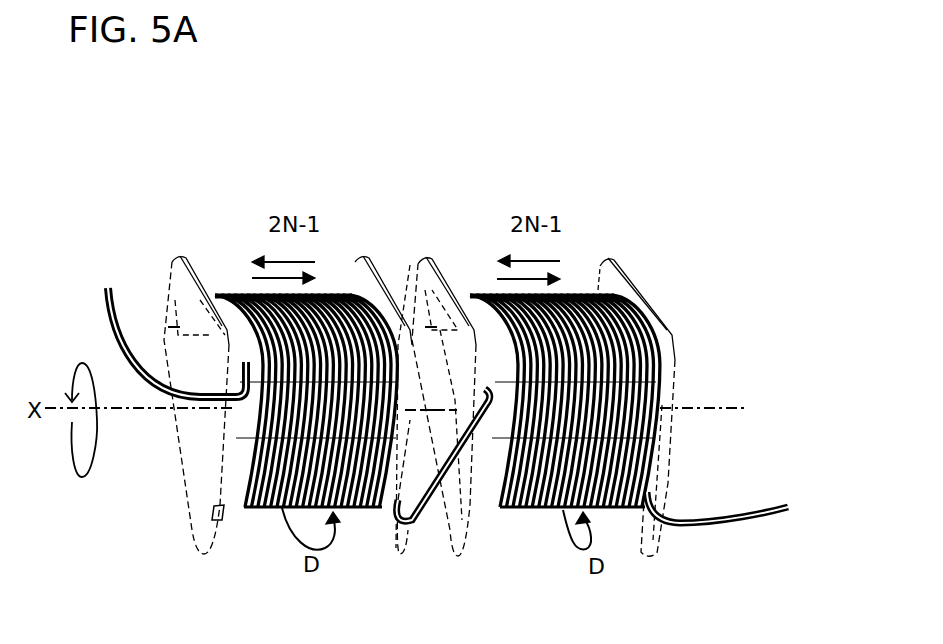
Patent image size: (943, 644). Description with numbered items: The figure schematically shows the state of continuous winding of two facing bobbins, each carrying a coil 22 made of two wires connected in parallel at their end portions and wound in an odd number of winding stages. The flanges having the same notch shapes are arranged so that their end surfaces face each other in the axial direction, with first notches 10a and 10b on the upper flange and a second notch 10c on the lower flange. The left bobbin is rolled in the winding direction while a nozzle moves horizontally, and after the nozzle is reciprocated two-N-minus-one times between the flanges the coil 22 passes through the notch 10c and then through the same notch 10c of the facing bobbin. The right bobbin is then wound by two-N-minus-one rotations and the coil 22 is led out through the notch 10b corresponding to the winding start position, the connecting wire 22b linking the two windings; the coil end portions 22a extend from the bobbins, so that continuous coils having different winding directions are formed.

The first notch 10a is at (232, 409).
The first notch 10b is at (214, 506).
The second notch 10c is at (478, 393).
The coil 22 is at (250, 512).
The lead end of coil wire 22a is at (108, 286).
The connecting wire 22b is at (427, 518).